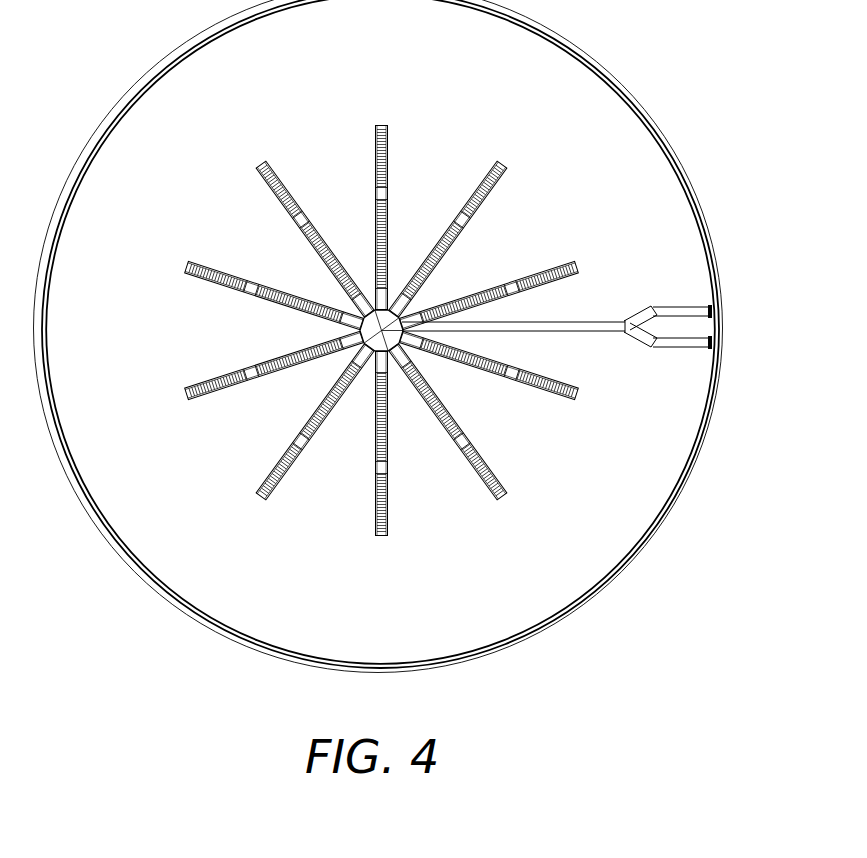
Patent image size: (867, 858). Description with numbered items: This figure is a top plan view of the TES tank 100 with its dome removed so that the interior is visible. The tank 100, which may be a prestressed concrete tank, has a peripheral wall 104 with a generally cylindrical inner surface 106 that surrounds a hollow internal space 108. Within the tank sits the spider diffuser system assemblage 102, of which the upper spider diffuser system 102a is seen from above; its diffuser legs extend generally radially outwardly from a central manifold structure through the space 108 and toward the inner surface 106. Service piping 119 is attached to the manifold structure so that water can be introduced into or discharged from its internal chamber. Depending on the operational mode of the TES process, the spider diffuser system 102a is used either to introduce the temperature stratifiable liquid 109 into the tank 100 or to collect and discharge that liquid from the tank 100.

The TES tank 100 is at (167, 600).
The spider diffuser system assemblage 102 is at (222, 335).
The spider diffuser system 102a is at (496, 238).
The peripheral wall 104 is at (576, 617).
The inner surface 106 is at (530, 30).
The hollow internal space 108 is at (235, 181).
The temperature stratifiable liquid 109 is at (405, 580).
The service piping 119 is at (532, 342).